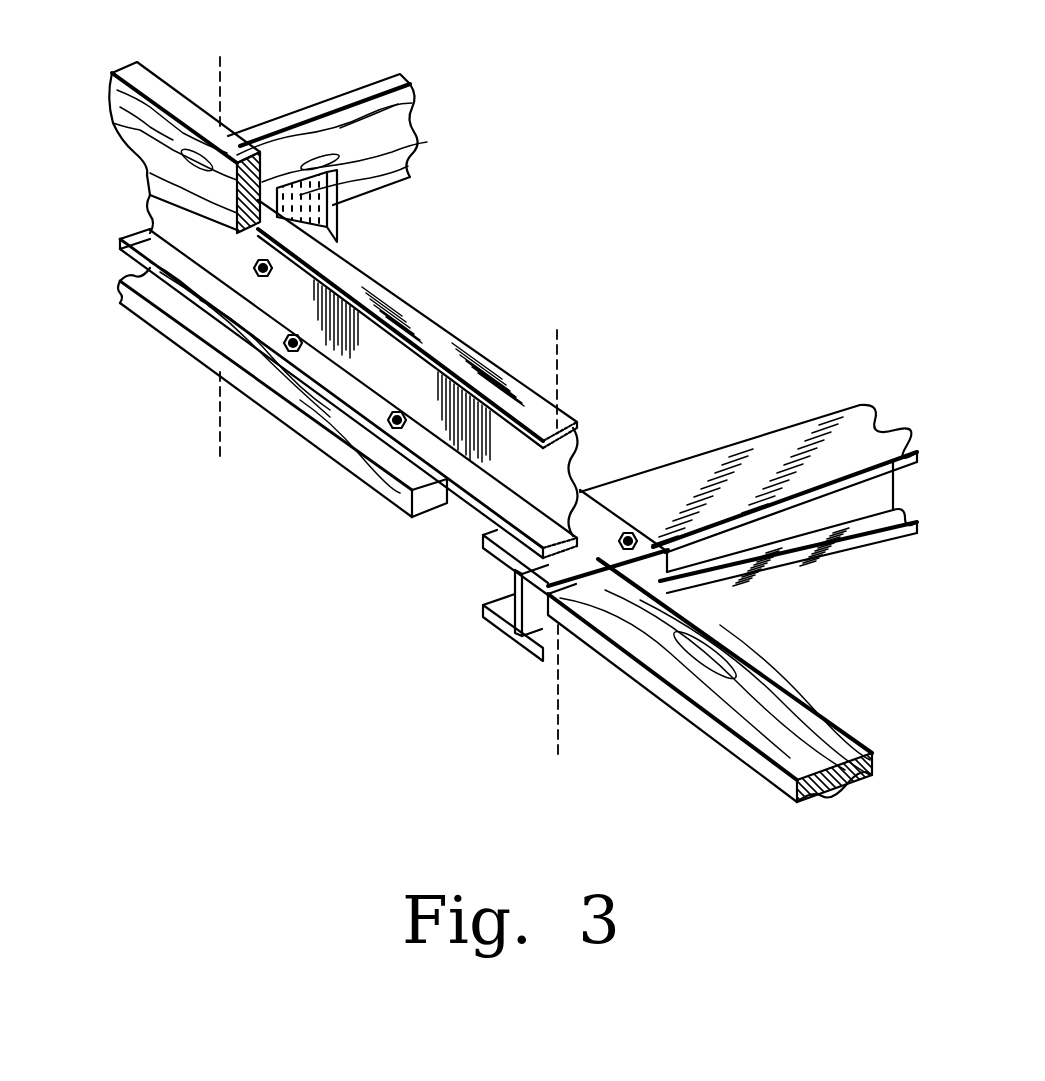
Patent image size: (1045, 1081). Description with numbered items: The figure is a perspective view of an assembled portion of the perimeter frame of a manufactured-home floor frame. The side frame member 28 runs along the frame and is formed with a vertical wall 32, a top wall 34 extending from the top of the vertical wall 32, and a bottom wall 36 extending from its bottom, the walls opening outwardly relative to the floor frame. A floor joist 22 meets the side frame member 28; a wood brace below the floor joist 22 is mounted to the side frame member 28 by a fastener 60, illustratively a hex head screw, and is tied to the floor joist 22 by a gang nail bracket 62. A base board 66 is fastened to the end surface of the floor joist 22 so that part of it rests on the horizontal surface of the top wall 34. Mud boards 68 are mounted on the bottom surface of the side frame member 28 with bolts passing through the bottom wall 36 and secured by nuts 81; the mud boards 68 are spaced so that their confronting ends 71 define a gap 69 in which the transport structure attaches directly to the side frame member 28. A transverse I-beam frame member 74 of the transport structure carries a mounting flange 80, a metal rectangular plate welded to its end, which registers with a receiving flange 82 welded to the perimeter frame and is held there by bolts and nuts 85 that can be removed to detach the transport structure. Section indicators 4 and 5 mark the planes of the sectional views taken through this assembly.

The section line 4- 4 is at (173, 32).
The section line 5- 5 is at (512, 318).
The floor joist 22 is at (378, 130).
The side frame member 28 is at (349, 379).
The vertical wall 32 is at (323, 428).
The top wall 34 is at (498, 370).
The bottom wall 36 is at (370, 368).
The fastener 60 is at (252, 268).
The gang nail bracket 62 is at (338, 219).
The base board 66 is at (118, 122).
The mud boards 68 is at (119, 286).
The gap 69 is at (488, 576).
The confronting ends 71 is at (532, 612).
The transverse I-beam frame member 74 is at (748, 498).
The mounting flange 80 is at (668, 574).
The nuts 81 is at (290, 353).
The receiving flange 82 is at (582, 503).
The nuts 85 is at (624, 534).